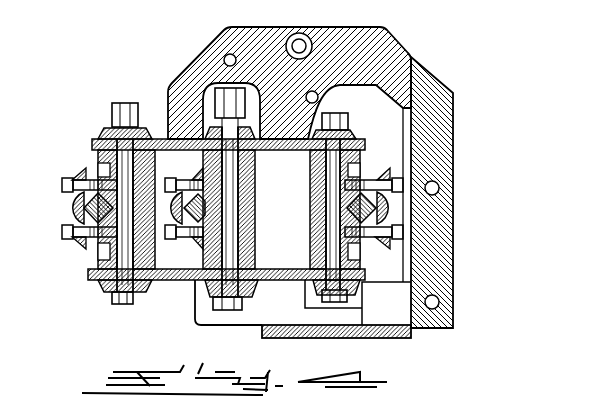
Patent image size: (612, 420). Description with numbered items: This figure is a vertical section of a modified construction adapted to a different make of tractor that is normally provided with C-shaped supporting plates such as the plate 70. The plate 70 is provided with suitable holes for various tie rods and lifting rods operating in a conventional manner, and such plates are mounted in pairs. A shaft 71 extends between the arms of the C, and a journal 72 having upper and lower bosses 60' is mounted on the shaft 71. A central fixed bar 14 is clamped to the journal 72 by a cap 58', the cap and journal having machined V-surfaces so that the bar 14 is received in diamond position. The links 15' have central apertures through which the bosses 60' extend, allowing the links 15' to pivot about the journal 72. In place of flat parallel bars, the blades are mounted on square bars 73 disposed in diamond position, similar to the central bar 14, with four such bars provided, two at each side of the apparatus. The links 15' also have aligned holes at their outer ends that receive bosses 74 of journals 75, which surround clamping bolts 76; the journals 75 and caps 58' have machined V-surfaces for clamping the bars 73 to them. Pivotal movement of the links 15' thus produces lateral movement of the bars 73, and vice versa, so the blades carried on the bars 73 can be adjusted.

The plate 70 is at (210, 48).
The links 15' is at (276, 216).
The bosses 74 is at (108, 128).
The square bars 73 is at (78, 200).
The journals 75 is at (95, 262).
The clamping bolts 76 is at (118, 304).
The central fixed bar 14 is at (186, 188).
The cap 58' is at (181, 246).
The bosses 60' is at (226, 209).
The shaft 71 is at (236, 205).
The journal 72 is at (258, 226).